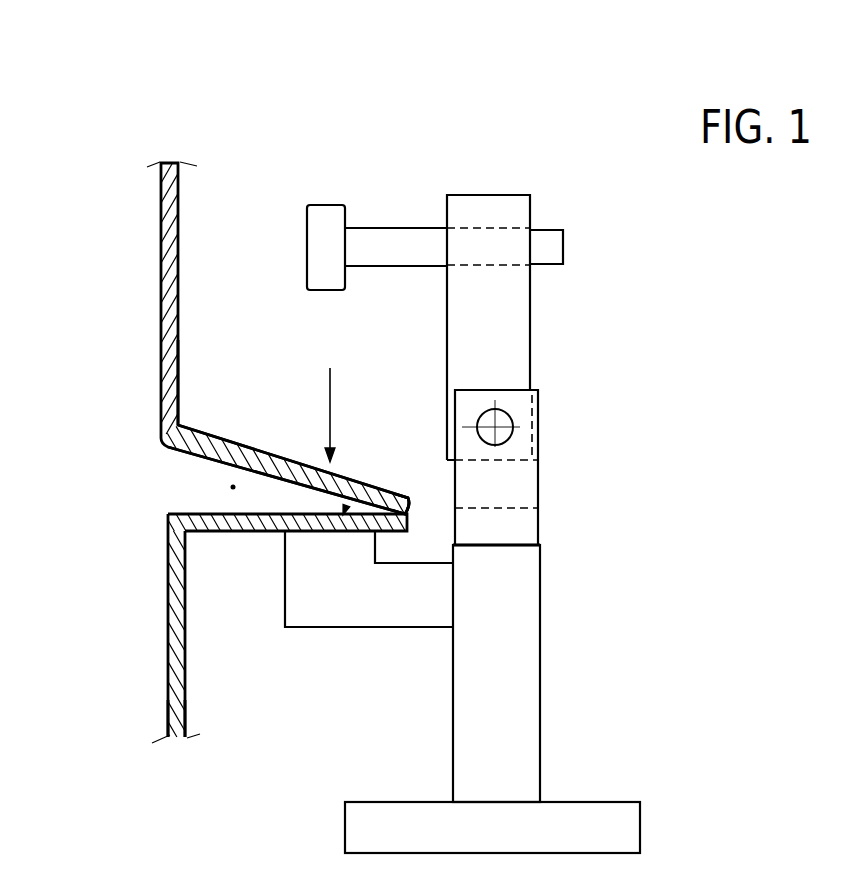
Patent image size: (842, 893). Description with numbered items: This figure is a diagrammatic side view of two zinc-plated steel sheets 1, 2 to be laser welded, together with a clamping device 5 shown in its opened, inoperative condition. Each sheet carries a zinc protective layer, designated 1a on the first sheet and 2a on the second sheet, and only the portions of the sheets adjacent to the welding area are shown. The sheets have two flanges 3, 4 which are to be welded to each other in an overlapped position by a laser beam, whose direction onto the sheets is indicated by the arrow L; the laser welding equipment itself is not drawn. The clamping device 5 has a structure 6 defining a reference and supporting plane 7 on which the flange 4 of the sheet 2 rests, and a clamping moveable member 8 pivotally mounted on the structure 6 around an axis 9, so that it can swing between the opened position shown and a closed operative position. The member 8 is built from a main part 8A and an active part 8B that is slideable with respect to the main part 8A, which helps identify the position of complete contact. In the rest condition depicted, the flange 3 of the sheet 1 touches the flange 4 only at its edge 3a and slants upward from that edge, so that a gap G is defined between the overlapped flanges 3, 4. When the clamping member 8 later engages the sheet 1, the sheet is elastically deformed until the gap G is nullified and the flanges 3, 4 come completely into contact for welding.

The steel sheet 1 is at (182, 247).
The zinc protective layer 1a is at (181, 352).
The steel sheet 2 is at (160, 602).
The zinc protective layer 2a is at (187, 710).
The flange 3 is at (245, 450).
The edge 3a is at (409, 508).
The flange 4 is at (228, 533).
The clamping device 5 is at (534, 504).
The structure 6 is at (541, 622).
The reference and supporting plane 7 is at (345, 507).
The clamping moveable member 8 is at (532, 198).
The main part 8A is at (512, 320).
The active part 8B is at (398, 245).
The axis 9 is at (505, 415).
The gap G is at (231, 487).
The arrow L is at (338, 415).